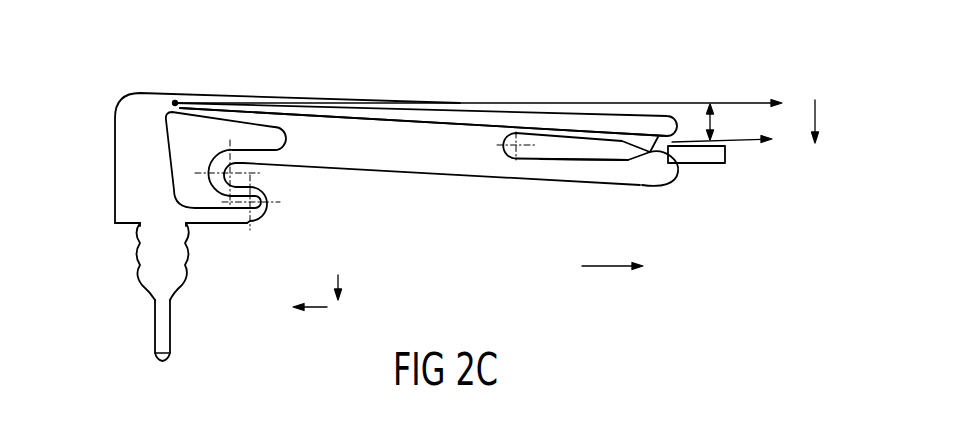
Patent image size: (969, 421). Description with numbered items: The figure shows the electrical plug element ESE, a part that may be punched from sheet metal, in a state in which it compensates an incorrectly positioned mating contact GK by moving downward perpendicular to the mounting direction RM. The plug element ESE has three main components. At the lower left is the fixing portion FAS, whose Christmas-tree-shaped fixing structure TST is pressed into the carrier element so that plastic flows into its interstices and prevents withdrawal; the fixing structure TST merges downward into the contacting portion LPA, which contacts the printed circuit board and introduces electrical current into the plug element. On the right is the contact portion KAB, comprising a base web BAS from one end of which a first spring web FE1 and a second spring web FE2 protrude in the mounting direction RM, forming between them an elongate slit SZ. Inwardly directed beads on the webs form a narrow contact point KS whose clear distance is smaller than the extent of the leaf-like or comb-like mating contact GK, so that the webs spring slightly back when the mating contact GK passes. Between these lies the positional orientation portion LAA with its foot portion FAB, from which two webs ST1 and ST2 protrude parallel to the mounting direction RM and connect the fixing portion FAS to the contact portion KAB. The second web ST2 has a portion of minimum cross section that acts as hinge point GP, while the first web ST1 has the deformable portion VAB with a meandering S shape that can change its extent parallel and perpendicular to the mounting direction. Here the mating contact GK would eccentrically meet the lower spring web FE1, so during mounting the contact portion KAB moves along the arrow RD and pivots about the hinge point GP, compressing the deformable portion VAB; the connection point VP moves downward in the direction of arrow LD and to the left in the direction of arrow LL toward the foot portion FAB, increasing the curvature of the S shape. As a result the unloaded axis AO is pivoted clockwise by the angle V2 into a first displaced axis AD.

The foot portion FAB is at (128, 137).
The hinge point GP is at (176, 100).
The second web ST2 is at (228, 112).
The positional orientation portion LAA is at (252, 80).
The connection point VP is at (278, 158).
The electrical plug element ESE is at (488, 82).
The second spring web FE2 is at (593, 116).
The contact portion KAB is at (680, 87).
The unloaded axis AO is at (492, 109).
The downward pivoting direction RD is at (816, 138).
The first displaced axis AD is at (724, 156).
The pivot angle V2 is at (725, 122).
The mating contact GK is at (712, 163).
The base web BAS is at (393, 164).
The slit SZ is at (518, 155).
The first spring web FE1 is at (583, 170).
The contact point KS is at (646, 160).
The first web ST1 is at (243, 226).
The deformable portion VAB is at (272, 203).
The fixing structure TST is at (147, 262).
The fixing portion FAS is at (172, 272).
The contacting portion LPA is at (155, 327).
The mounting direction RM is at (612, 283).
The downward movement direction LD is at (354, 284).
The leftward movement direction LL is at (312, 325).